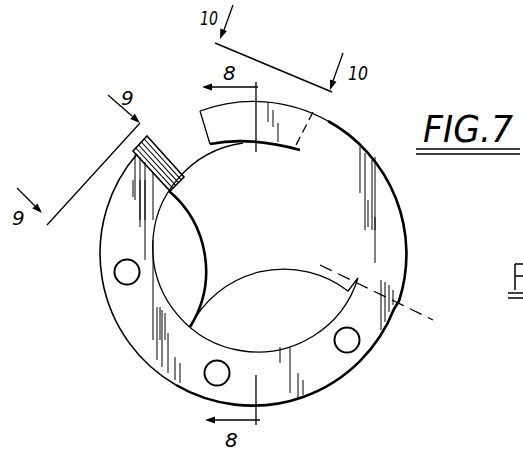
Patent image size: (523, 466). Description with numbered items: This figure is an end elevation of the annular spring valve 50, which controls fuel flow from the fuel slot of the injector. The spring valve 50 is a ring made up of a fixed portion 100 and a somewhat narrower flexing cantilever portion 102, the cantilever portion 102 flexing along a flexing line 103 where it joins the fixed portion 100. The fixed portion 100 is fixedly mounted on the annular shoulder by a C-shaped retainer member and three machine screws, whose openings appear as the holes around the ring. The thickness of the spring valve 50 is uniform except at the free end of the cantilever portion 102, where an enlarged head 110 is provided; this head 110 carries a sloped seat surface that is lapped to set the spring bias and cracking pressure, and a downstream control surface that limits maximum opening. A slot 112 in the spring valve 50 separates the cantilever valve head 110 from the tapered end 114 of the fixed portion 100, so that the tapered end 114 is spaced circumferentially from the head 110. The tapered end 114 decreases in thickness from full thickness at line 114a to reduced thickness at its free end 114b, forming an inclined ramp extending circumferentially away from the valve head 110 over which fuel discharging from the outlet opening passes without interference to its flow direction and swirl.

The spring valve 50 is at (410, 208).
The fixed portion 100 is at (142, 343).
The cantilever portion 102 is at (348, 143).
The flexing line 103 is at (410, 307).
The head 110 is at (240, 132).
The slot 112 is at (195, 153).
The tapered end 114 is at (137, 135).
The line 114a is at (164, 195).
The free end 114b is at (144, 135).